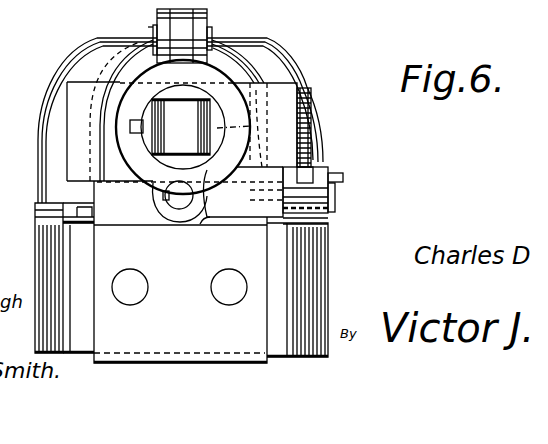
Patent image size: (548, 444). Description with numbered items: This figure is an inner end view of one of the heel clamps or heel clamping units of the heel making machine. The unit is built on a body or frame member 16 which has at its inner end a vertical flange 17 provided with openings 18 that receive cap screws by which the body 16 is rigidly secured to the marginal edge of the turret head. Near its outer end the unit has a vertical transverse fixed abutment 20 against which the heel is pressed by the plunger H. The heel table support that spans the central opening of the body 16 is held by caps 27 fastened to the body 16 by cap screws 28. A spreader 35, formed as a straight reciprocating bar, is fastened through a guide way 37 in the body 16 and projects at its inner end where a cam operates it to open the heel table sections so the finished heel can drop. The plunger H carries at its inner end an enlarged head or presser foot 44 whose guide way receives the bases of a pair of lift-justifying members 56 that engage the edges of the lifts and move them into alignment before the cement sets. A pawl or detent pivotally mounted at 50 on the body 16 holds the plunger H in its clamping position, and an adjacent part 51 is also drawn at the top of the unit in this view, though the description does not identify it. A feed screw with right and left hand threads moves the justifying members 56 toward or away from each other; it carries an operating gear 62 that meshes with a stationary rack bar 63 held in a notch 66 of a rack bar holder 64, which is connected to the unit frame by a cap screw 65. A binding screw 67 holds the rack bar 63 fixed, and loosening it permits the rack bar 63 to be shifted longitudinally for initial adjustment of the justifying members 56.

The body or frame member 16 is at (325, 255).
The vertical flange 17 is at (180, 272).
The openings 18 is at (211, 287).
The fixed abutment 20 is at (108, 38).
The caps 27 is at (60, 204).
The cap screws 28 is at (87, 218).
The spreader 35 is at (177, 204).
The guide way 37 is at (213, 233).
The plunger head or presser foot 44 is at (78, 98).
The pivot of the pawl or detent 50 is at (212, 40).
The cylinder flange 51 is at (153, 29).
The lift-justifying members 56 is at (247, 47).
The operating gear 62 is at (311, 113).
The rack bar 63 is at (312, 166).
The rack bar holder 64 is at (343, 182).
The cap screw 65 is at (335, 203).
The notch 66 is at (297, 179).
The binding screw 67 is at (130, 3).
The plunger H is at (206, 127).